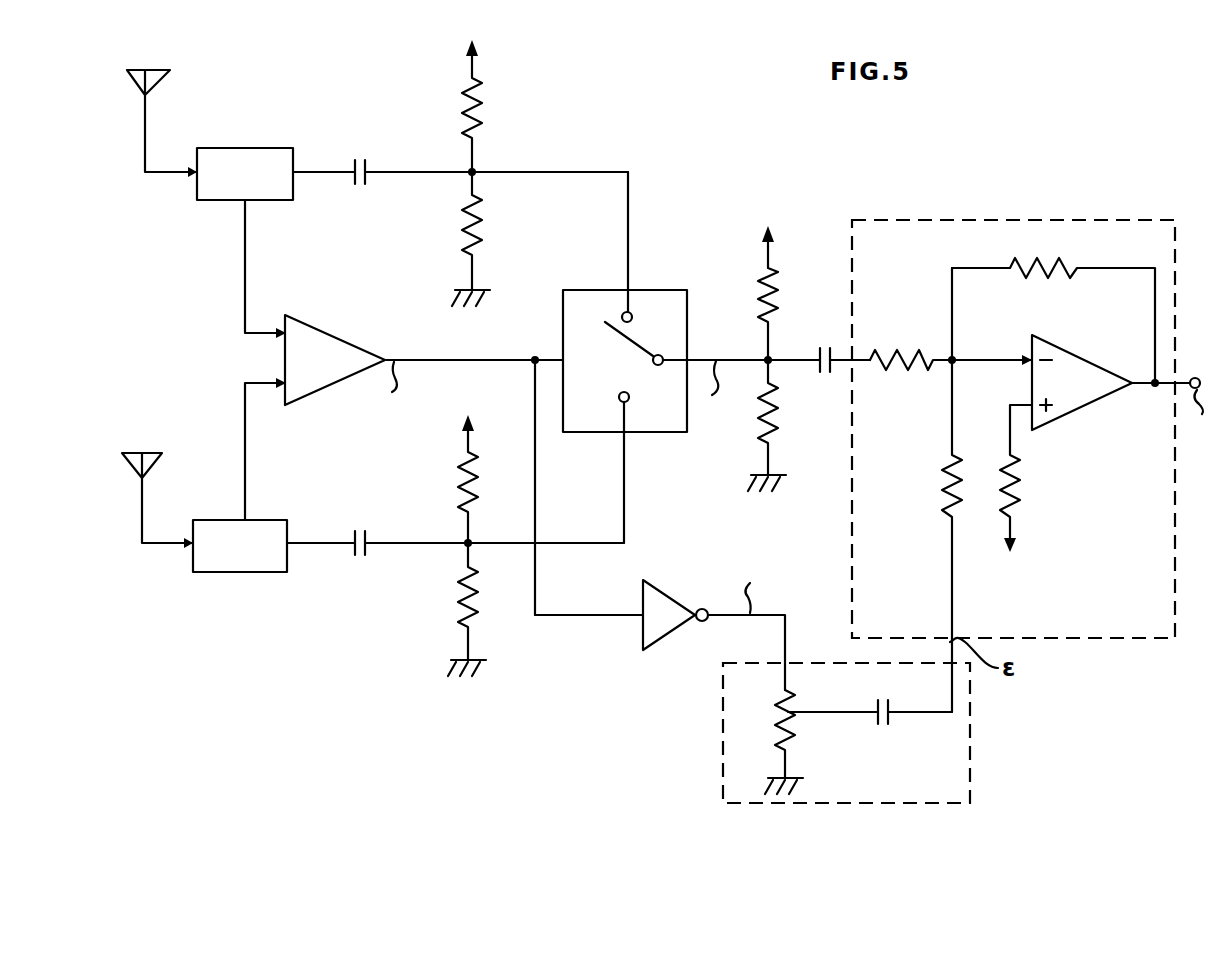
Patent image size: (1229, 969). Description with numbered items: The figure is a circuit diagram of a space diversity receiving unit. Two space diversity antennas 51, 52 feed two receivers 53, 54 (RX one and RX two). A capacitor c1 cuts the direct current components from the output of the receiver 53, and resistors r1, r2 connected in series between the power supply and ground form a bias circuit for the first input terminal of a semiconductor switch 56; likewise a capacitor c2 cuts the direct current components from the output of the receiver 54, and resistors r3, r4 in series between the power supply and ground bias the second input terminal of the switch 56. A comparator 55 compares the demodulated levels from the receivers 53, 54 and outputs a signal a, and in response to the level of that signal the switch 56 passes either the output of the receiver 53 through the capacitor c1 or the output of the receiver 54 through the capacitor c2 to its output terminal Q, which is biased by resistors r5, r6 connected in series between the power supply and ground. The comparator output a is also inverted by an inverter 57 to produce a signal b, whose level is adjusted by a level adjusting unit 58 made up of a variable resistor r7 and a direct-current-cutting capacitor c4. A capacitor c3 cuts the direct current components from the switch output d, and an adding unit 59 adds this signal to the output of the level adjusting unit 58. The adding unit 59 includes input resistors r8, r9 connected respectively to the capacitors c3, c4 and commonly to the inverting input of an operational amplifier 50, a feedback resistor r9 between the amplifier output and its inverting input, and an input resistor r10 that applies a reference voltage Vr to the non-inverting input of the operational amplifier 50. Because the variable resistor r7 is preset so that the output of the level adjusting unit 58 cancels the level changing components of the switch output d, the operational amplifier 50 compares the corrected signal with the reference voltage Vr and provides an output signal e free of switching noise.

The operational amplifier 50 is at (1056, 348).
The space diversity antenna 51 is at (150, 72).
The space diversity antenna 52 is at (146, 453).
The receiver (RX1) 53 is at (245, 148).
The receiver (RX2) 54 is at (268, 520).
The comparator 55 is at (318, 330).
The semiconductor switch 56 is at (664, 290).
The inverter 57 is at (665, 592).
The level adjusting unit 58 is at (970, 730).
The adding unit 59 is at (1127, 638).
The resistor r1 is at (479, 118).
The resistor r2 is at (485, 234).
The resistor r3 is at (477, 478).
The resistor r4 is at (477, 596).
The resistor r5 is at (780, 281).
The resistor r6 is at (774, 434).
The variable resistor r7 is at (777, 705).
The input resistor r8 is at (892, 357).
The input resistor / feedback resistor r9 is at (1067, 264).
The input resistor r10 is at (1021, 482).
The capacitor c1 is at (361, 160).
The capacitor c2 is at (362, 528).
The capacitor c3 is at (816, 350).
The capacitor c4 is at (879, 690).